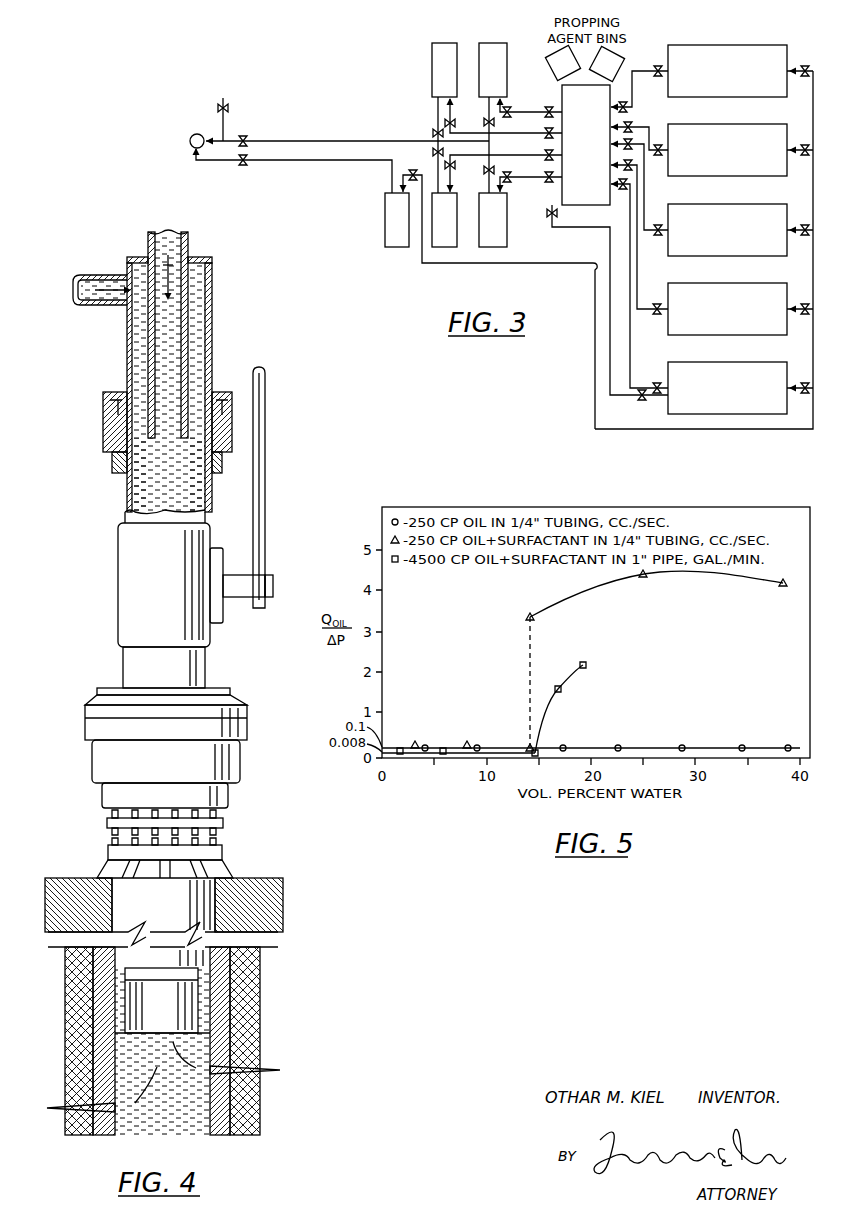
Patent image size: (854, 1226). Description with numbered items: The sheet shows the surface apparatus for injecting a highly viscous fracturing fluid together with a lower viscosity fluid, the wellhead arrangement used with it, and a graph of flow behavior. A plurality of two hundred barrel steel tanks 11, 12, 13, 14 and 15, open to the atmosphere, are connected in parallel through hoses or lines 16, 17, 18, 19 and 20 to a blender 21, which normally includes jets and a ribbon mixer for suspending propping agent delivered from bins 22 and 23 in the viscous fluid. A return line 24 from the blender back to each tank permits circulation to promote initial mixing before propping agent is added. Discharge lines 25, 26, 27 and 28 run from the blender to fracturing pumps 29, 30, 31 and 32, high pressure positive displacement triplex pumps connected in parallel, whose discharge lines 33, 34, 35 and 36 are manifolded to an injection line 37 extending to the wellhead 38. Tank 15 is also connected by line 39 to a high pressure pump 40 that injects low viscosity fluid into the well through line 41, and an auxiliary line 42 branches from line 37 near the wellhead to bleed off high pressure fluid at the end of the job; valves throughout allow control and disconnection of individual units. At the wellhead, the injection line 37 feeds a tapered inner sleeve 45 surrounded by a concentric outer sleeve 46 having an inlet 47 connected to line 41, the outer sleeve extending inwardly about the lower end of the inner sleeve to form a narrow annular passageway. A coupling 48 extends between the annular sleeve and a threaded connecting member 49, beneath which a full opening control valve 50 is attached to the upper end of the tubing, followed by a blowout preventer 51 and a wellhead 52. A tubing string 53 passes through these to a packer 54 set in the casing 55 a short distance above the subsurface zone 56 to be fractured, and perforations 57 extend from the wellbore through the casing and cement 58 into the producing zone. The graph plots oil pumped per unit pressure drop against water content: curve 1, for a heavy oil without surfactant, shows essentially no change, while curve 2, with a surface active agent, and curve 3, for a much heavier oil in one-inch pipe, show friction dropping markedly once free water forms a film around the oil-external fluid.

In FIG. 5, the curve 1 is at (645, 747).
In FIG. 5, the curve 2 is at (605, 584).
In FIG. 5, the curve 3 is at (573, 672).
In FIG. 3, the tank 11 is at (710, 46).
In FIG. 3, the tank 12 is at (714, 124).
In FIG. 3, the tank 13 is at (714, 204).
In FIG. 3, the tank 14 is at (716, 283).
In FIG. 3, the tank 15 is at (714, 362).
In FIG. 3, the line 16 is at (636, 71).
In FIG. 3, the line 17 is at (640, 127).
In FIG. 3, the line 18 is at (645, 196).
In FIG. 3, the line 19 is at (638, 272).
In FIG. 3, the line 20 is at (631, 354).
In FIG. 3, the blender 21 is at (587, 206).
In FIG. 3, the propping agent bin 22 is at (621, 60).
In FIG. 3, the propping agent bin 23 is at (548, 62).
In FIG. 3, the return line 24 is at (745, 430).
In FIG. 3, the discharge line 25 is at (540, 112).
In FIG. 3, the discharge line 26 is at (507, 133).
In FIG. 3, the discharge line 27 is at (507, 155).
In FIG. 3, the discharge line 28 is at (541, 178).
In FIG. 3, the fracturing pump 29 is at (432, 66).
In FIG. 3, the fracturing pump 30 is at (508, 90).
In FIG. 3, the fracturing pump 31 is at (452, 236).
In FIG. 3, the fracturing pump 32 is at (510, 236).
In FIG. 3, the discharge line 33 is at (437, 118).
In FIG. 3, the discharge line 34 is at (488, 104).
In FIG. 3, the discharge line 35 is at (436, 172).
In FIG. 3, the discharge line 36 is at (487, 185).
In FIG. 3, the injection line 37 is at (284, 141).
In FIG. 3, the wellhead 38 is at (189, 146).
In FIG. 3, the line 39 is at (549, 265).
In FIG. 3, the high pressure pump 40 is at (395, 248).
In FIG. 3, the line 41 is at (286, 161).
In FIG. 3, the auxiliary line 42 is at (225, 116).
In FIG. 4, the tapered inner sleeve 45 is at (187, 346).
In FIG. 4, the outer sleeve 46 is at (212, 364).
In FIG. 4, the inlet 47 is at (120, 306).
In FIG. 4, the coupling 48 is at (103, 415).
In FIG. 4, the threaded connecting member 49 is at (112, 467).
In FIG. 4, the full opening control valve 50 is at (118, 581).
In FIG. 4, the blowout preventer 51 is at (92, 762).
In FIG. 4, the wellhead 52 is at (108, 851).
In FIG. 4, the tubing string 53 is at (123, 667).
In FIG. 4, the packer 54 is at (125, 972).
In FIG. 4, the casing 55 is at (225, 1013).
In FIG. 4, the subsurface zone 56 is at (93, 1052).
In FIG. 4, the perforations 57 is at (262, 1068).
In FIG. 4, the cement 58 is at (228, 1122).